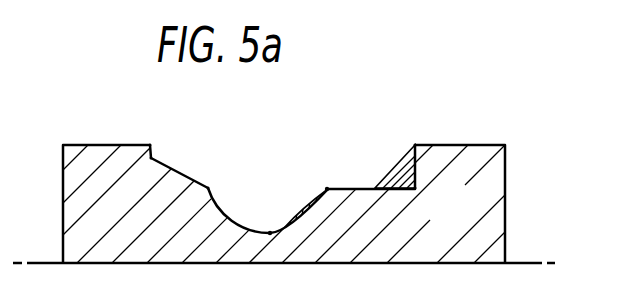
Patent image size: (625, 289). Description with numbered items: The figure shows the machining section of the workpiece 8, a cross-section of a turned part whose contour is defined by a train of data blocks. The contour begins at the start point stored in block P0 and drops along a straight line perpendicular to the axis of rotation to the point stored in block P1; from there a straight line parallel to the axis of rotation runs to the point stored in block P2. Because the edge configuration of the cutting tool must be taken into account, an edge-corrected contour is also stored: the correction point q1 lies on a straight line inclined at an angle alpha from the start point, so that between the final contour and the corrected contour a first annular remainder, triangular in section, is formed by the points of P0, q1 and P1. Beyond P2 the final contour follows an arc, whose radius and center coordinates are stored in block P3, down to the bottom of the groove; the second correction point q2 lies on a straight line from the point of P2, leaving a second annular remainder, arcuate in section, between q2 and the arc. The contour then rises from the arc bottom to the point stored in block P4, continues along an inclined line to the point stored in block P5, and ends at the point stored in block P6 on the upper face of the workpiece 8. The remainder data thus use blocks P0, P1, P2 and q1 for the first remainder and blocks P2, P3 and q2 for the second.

The workpiece 8 is at (505, 172).
The data block P0 is at (415, 145).
The data block P1 is at (415, 188).
The data block P2 is at (326, 188).
The data block P3 is at (270, 233).
The data block P4 is at (208, 188).
The data block P5 is at (153, 156).
The data block P6 is at (150, 145).
The point q1 is at (375, 188).
The point q2 is at (284, 228).